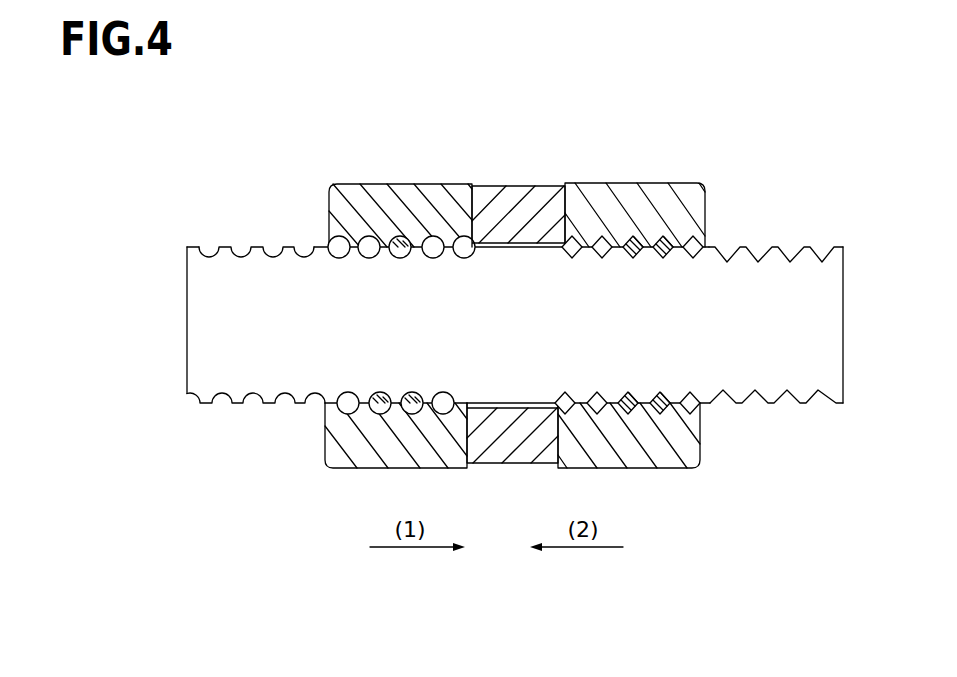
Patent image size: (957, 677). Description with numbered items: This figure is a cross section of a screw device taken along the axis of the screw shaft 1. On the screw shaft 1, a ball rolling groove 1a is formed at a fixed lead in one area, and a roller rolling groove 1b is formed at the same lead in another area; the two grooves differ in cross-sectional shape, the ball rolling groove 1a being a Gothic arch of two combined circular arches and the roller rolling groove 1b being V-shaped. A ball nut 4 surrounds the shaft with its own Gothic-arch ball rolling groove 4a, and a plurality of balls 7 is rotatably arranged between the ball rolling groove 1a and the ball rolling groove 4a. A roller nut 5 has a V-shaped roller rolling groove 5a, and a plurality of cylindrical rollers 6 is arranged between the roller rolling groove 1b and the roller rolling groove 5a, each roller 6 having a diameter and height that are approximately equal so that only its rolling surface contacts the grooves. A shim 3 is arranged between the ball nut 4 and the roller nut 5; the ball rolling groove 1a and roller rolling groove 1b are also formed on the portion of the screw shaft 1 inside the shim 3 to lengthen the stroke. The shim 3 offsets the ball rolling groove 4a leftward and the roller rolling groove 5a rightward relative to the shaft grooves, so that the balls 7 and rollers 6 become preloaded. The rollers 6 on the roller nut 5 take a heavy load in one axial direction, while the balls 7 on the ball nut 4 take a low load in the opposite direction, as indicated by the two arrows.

The screw shaft 1 is at (775, 268).
The ball rolling groove 1a is at (224, 400).
The roller rolling groove 1b is at (757, 402).
The shim 3 is at (513, 236).
The ball nut 4 is at (450, 236).
The ball rolling groove 4a is at (366, 240).
The roller nut 5 is at (585, 238).
The roller rolling groove 5a is at (706, 243).
The roller 6 is at (641, 240).
The ball 7 is at (398, 240).